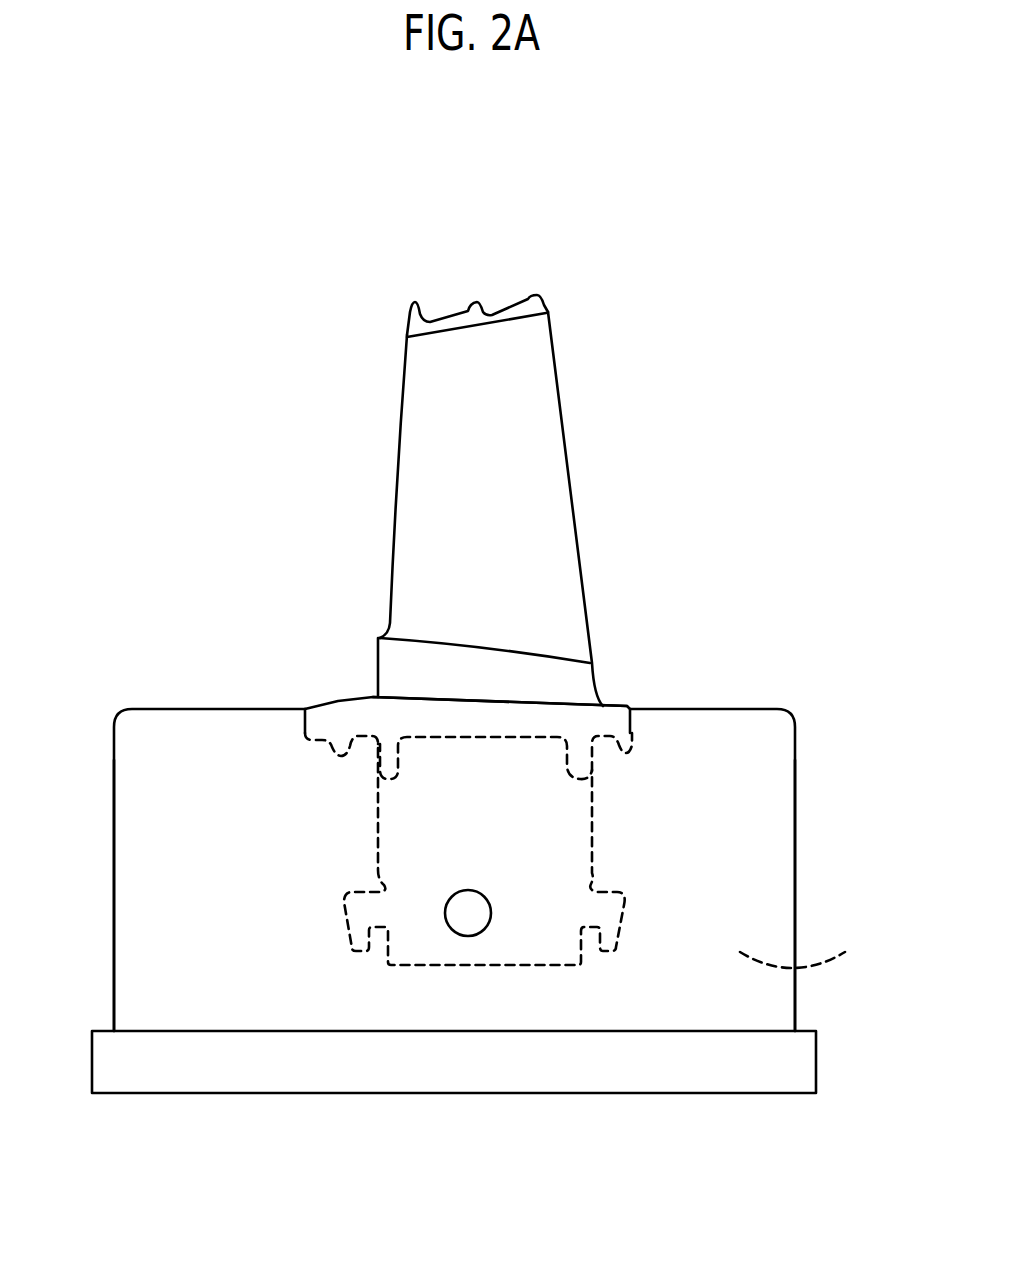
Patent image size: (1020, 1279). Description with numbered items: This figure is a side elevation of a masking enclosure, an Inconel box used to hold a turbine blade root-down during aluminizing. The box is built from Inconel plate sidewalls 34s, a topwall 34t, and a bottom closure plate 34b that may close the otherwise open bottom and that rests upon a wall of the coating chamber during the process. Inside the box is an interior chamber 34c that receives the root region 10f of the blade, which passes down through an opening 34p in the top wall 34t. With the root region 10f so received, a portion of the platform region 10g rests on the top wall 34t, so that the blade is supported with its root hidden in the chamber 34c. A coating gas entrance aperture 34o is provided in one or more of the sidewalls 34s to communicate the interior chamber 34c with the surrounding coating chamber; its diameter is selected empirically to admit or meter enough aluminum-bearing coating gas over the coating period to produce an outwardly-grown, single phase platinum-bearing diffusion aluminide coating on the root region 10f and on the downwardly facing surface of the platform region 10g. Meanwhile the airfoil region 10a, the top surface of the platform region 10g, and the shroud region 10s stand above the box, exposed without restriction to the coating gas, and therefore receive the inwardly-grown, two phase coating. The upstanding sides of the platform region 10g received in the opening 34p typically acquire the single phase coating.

The airfoil region 10a is at (499, 448).
The shroud region 10s is at (438, 317).
The platform region 10g is at (337, 702).
The root region 10f is at (373, 853).
The topwall 34t is at (217, 709).
The sidewalls 34s is at (113, 877).
The opening 34p is at (559, 704).
The bottom closure plate 34b is at (785, 1056).
The interior chamber 34c is at (808, 943).
The coating gas entrance aperture 34o is at (467, 890).